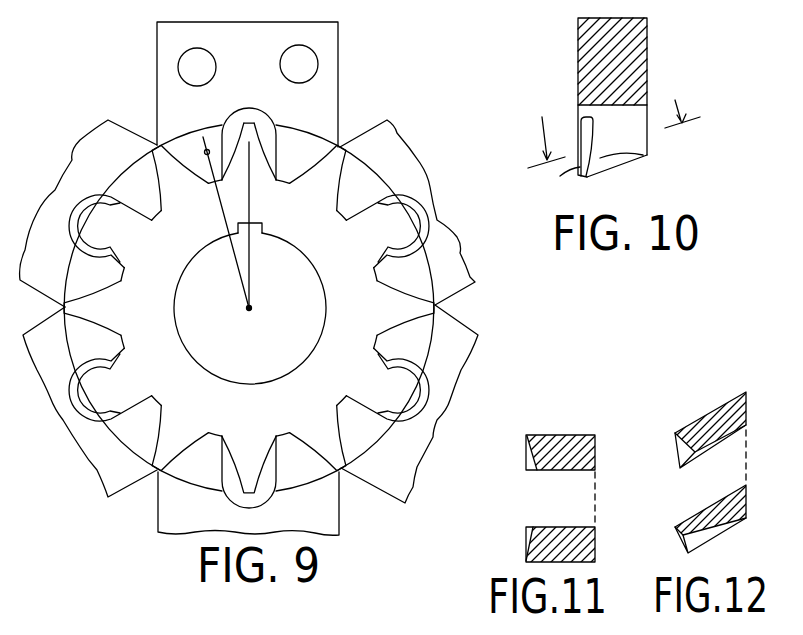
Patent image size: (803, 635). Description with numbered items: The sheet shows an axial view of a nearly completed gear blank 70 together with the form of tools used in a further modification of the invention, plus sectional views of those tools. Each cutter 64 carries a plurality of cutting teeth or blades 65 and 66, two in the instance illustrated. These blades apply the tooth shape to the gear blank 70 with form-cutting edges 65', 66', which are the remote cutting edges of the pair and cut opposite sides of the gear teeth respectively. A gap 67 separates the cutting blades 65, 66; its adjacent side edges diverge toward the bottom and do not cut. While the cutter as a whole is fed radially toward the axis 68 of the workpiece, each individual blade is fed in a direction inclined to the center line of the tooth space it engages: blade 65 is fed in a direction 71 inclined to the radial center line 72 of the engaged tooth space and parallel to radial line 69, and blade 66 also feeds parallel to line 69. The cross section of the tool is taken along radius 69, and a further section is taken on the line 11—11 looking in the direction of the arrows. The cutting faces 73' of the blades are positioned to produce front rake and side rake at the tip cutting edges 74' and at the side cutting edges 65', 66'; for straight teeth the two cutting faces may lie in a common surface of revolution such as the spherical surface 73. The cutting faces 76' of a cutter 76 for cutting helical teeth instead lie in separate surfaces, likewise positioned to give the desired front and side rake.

In FIG. 9, the cutter 64 is at (327, 75).
In FIG. 10, the cutter 64 is at (630, 72).
In FIG. 9, the cutting tooth or blade 65 is at (211, 141).
In FIG. 10, the cutting tooth or blade 65 is at (639, 167).
In FIG. 9, the cutting tooth or blade 66 is at (290, 141).
In FIG. 9, the gap 67 is at (233, 125).
In FIG. 9, the form-cutting edge 65' is at (90, 213).
In FIG. 10, the form-cutting edge 65' is at (565, 185).
In FIG. 9, the form-cutting edge 66' is at (407, 212).
In FIG. 9, the axis of the workpiece 68 is at (250, 307).
In FIG. 9, the radial line 69 is at (252, 275).
In FIG. 9, the gear 70 is at (348, 332).
In FIG. 9, the feed direction 71 is at (213, 193).
In FIG. 9, the radial center line of the engaged tooth space 72 is at (223, 213).
In FIG. 11, the spherical surface 73 is at (541, 499).
In FIG. 10, the cutting face 73' is at (565, 146).
In FIG. 11, the cutting face 73' is at (513, 453).
In FIG. 9, the tip cutting edge 74' is at (135, 231).
In FIG. 11, the tip cutting edge 74' is at (528, 461).
In FIG. 12, the cutter 76 is at (709, 421).
In FIG. 12, the cutting face 76' is at (699, 468).
In FIG. 10, the section line 11 is at (614, 144).